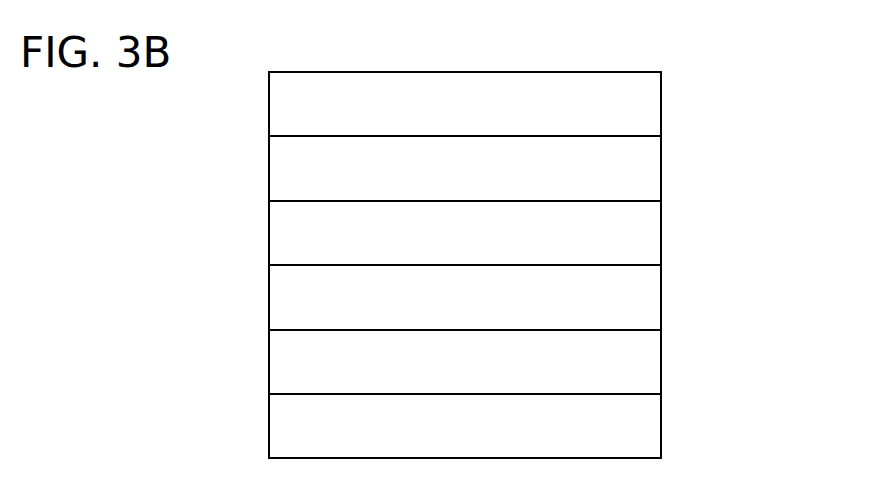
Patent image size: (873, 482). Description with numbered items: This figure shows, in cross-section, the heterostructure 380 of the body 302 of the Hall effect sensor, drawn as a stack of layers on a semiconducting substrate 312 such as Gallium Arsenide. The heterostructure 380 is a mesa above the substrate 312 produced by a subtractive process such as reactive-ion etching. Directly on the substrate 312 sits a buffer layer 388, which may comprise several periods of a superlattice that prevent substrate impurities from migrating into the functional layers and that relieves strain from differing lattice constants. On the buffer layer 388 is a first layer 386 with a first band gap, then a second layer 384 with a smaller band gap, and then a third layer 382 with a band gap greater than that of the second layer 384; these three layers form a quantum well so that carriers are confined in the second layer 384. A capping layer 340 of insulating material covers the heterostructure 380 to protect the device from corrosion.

The body 302 is at (193, 72).
The heterostructure 380 is at (247, 138).
The capping layer 340 is at (661, 102).
The third layer 382 is at (661, 168).
The second layer 384 is at (661, 233).
The first layer 386 is at (661, 297).
The buffer layer 388 is at (661, 362).
The semiconducting substrate 312 is at (661, 428).